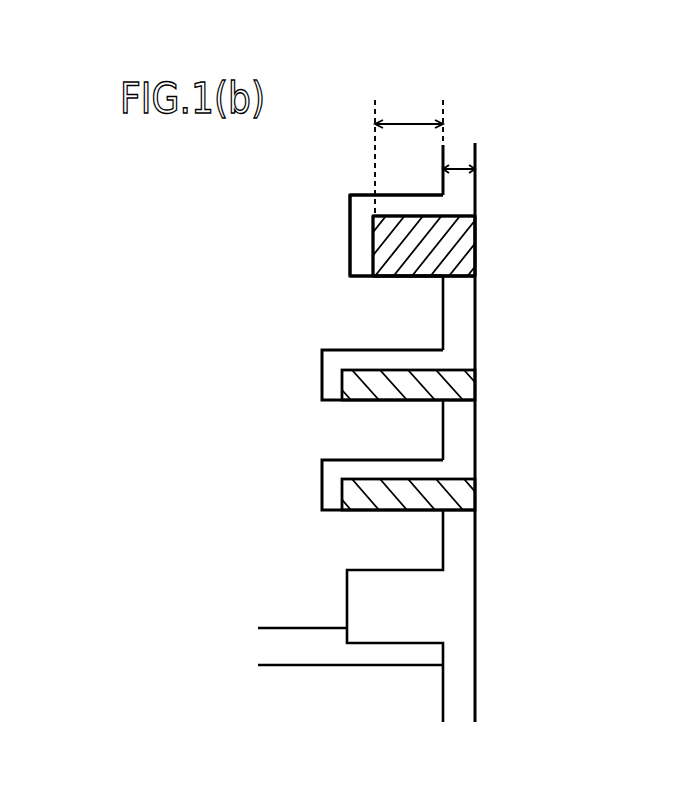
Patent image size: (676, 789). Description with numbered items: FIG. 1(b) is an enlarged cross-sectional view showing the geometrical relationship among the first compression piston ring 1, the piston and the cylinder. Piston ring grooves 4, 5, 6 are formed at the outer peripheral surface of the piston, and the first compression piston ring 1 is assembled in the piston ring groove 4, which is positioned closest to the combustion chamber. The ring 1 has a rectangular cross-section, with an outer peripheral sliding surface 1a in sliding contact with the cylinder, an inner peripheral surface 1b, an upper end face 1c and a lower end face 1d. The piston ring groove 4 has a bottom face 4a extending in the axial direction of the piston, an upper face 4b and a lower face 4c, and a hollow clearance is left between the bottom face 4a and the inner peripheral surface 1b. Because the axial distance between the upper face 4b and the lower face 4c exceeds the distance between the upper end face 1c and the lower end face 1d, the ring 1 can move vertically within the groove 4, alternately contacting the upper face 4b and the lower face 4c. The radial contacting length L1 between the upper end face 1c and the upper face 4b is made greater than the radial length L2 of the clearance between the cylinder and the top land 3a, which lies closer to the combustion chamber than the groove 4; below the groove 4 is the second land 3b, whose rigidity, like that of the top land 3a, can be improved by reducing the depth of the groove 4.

The first compression piston ring 1 is at (453, 238).
The outer peripheral sliding surface 1a is at (476, 253).
The inner peripheral surface 1b is at (374, 240).
The upper end face 1c is at (440, 214).
The lower end face 1d is at (455, 278).
The top land 3a is at (443, 154).
The second land 3b is at (445, 325).
The piston ring groove 4 is at (350, 213).
The bottom face 4a is at (350, 256).
The upper face 4b is at (398, 196).
The lower face 4c is at (408, 278).
The piston ring groove 5 is at (322, 364).
The piston ring groove 6 is at (322, 475).
The radial contacting length L1 is at (409, 156).
The radial length of clearance L2 is at (461, 171).